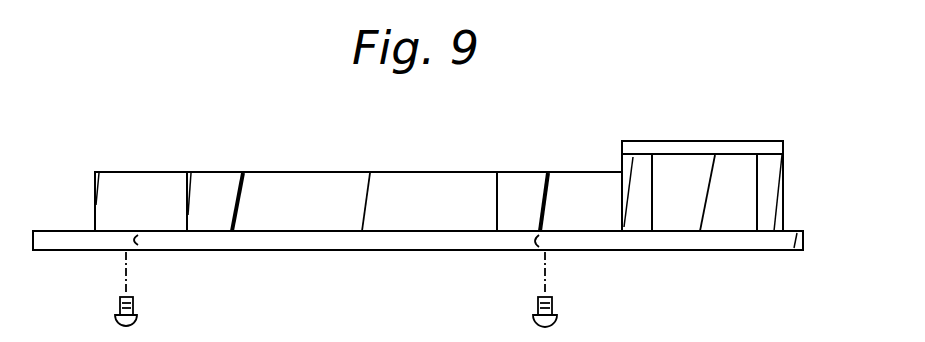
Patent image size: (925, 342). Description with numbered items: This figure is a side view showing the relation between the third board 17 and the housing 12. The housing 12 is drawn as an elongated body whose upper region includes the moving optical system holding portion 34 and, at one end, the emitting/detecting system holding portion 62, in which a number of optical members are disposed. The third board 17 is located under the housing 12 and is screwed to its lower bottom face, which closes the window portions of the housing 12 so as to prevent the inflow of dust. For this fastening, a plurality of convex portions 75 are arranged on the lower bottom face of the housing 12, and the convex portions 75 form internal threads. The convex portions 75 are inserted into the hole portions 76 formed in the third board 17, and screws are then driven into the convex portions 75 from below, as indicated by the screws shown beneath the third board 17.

The housing 12 is at (785, 167).
The third board 17 is at (763, 250).
The moving optical system holding portion 34 is at (396, 171).
The emitting/detecting system holding portion 62 is at (700, 141).
The convex portions 75 is at (115, 253).
The hole portions 76 is at (133, 253).